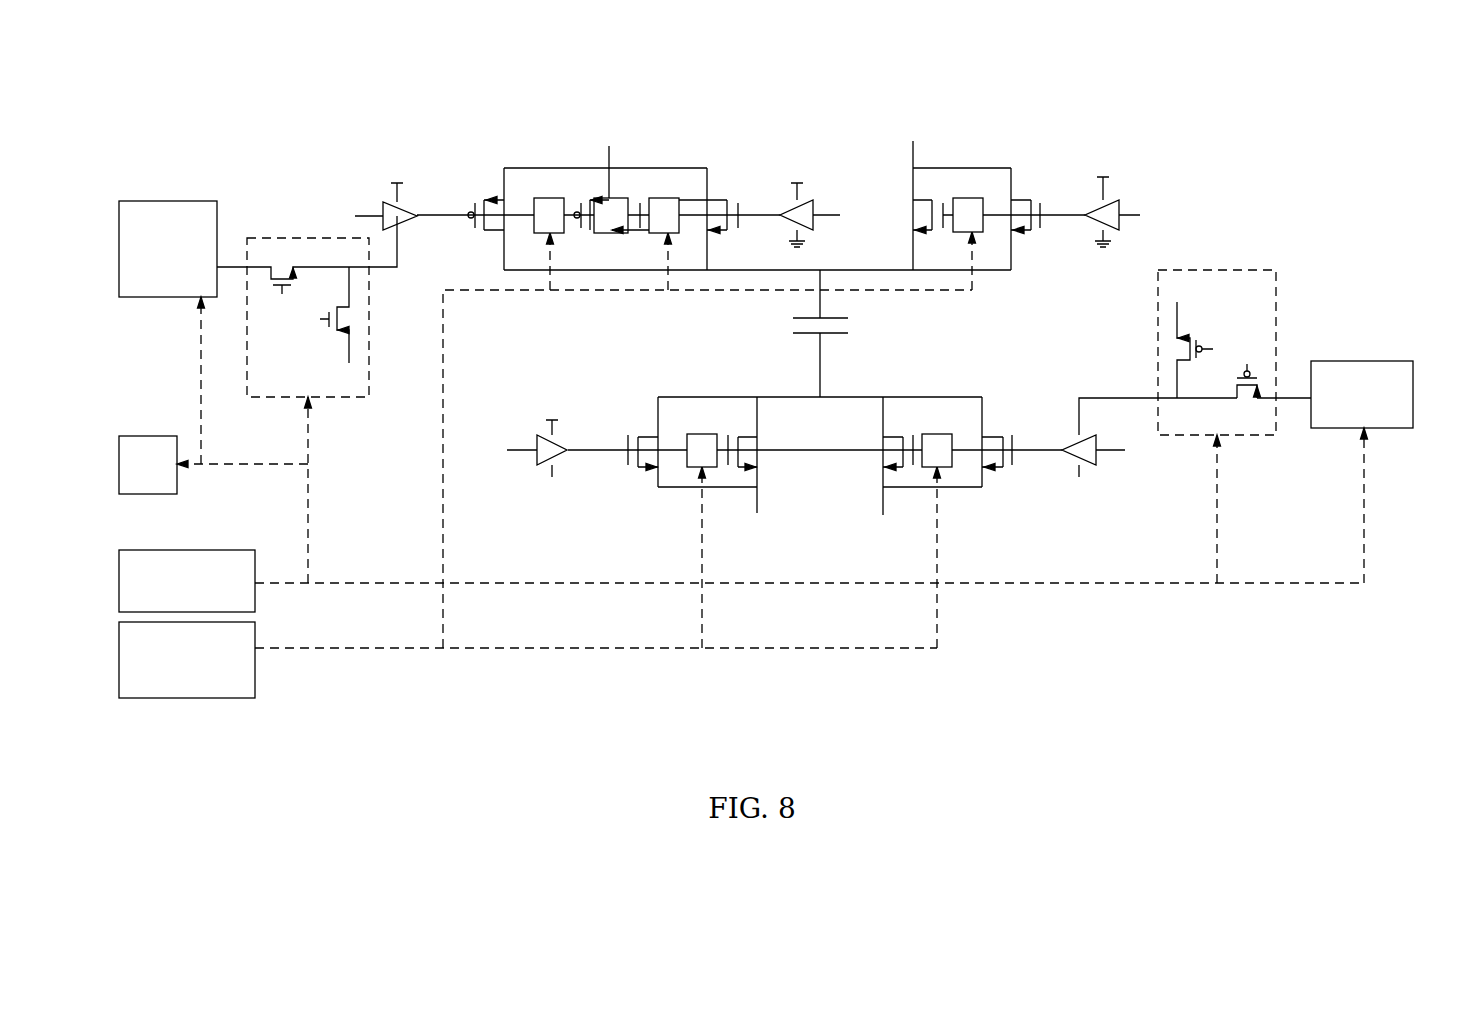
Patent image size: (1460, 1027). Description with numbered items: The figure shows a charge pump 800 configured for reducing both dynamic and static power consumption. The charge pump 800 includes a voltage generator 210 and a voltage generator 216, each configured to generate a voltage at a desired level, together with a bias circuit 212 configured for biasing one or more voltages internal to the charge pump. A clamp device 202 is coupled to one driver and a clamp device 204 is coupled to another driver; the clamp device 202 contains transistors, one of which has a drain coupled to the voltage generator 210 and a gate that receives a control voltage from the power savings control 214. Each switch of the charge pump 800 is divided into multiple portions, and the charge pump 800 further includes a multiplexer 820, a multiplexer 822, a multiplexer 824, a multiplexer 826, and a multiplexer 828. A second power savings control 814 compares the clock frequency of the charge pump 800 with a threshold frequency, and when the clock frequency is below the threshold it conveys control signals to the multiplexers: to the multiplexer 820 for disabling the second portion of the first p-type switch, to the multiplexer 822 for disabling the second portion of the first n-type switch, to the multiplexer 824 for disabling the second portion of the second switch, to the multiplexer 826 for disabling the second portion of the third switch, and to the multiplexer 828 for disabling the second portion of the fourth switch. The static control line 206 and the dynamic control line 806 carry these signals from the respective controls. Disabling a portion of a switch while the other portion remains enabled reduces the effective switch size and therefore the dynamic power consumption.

The charge pump 800 is at (1264, 104).
The clamp device 202 is at (370, 375).
The clamp device 204 is at (1277, 308).
The static power saving control signal line 206 is at (524, 583).
The voltage generator 210 is at (198, 200).
The bias circuit 212 is at (172, 436).
The power savings control 214 is at (219, 549).
The voltage generator 216 is at (1386, 361).
The dynamic power saving control signal line 806 is at (600, 648).
The power savings control 814 is at (232, 698).
The multiplexer 820 is at (533, 206).
The multiplexer 822 is at (680, 202).
The multiplexer 824 is at (986, 202).
The multiplexer 826 is at (697, 470).
The multiplexer 828 is at (952, 468).